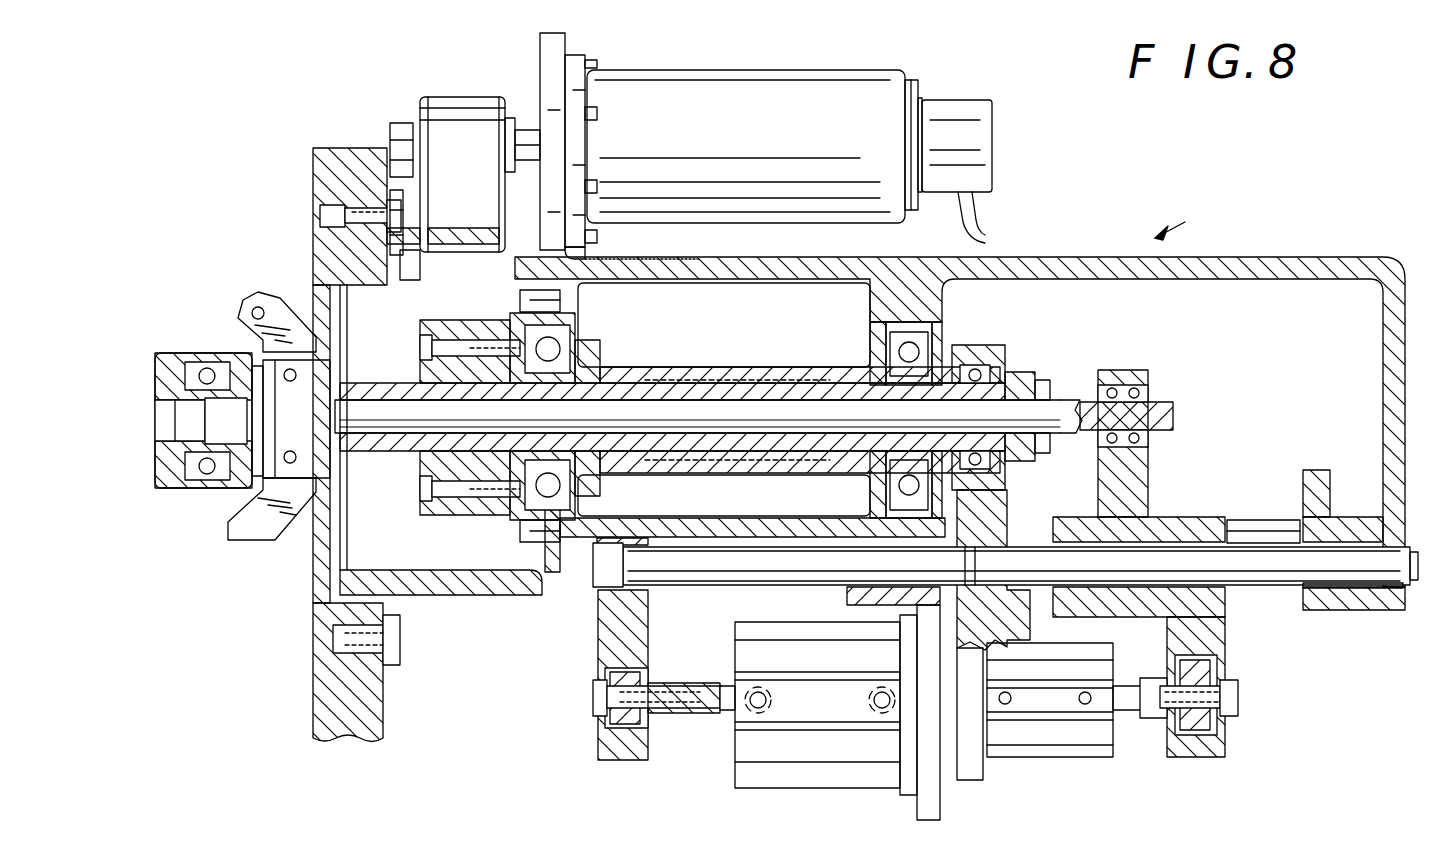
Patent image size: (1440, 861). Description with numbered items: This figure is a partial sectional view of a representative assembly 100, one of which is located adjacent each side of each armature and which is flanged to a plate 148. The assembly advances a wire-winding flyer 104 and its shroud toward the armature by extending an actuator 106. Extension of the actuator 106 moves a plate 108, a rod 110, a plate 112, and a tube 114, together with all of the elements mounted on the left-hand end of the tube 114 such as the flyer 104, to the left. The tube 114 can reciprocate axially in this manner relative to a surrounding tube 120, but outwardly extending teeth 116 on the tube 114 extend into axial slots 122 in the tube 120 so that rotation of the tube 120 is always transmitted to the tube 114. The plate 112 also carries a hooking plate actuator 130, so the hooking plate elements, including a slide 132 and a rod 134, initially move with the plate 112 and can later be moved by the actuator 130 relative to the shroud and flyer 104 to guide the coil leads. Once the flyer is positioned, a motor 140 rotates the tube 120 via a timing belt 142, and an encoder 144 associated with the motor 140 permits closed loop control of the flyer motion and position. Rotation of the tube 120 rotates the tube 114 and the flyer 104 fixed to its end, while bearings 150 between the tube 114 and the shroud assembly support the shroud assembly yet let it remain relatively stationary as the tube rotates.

The assembly 100 is at (872, 410).
The wire-winding flyer 104 is at (262, 296).
The actuator 106 is at (834, 786).
The plate 108 is at (598, 652).
The rod 110 is at (742, 570).
The plate 112 is at (1000, 622).
The tube 114 is at (802, 452).
The teeth 116 is at (656, 366).
The tube 120 is at (742, 347).
The axial slots 122 is at (770, 377).
The hooking plate actuator 130 is at (1058, 755).
The slide 132 is at (1228, 648).
The rod 134 is at (1057, 400).
The motor 140 is at (796, 74).
The timing belt 142 is at (430, 299).
The encoder 144 is at (993, 123).
The plate 148 is at (313, 172).
The bearings 150 is at (205, 488).